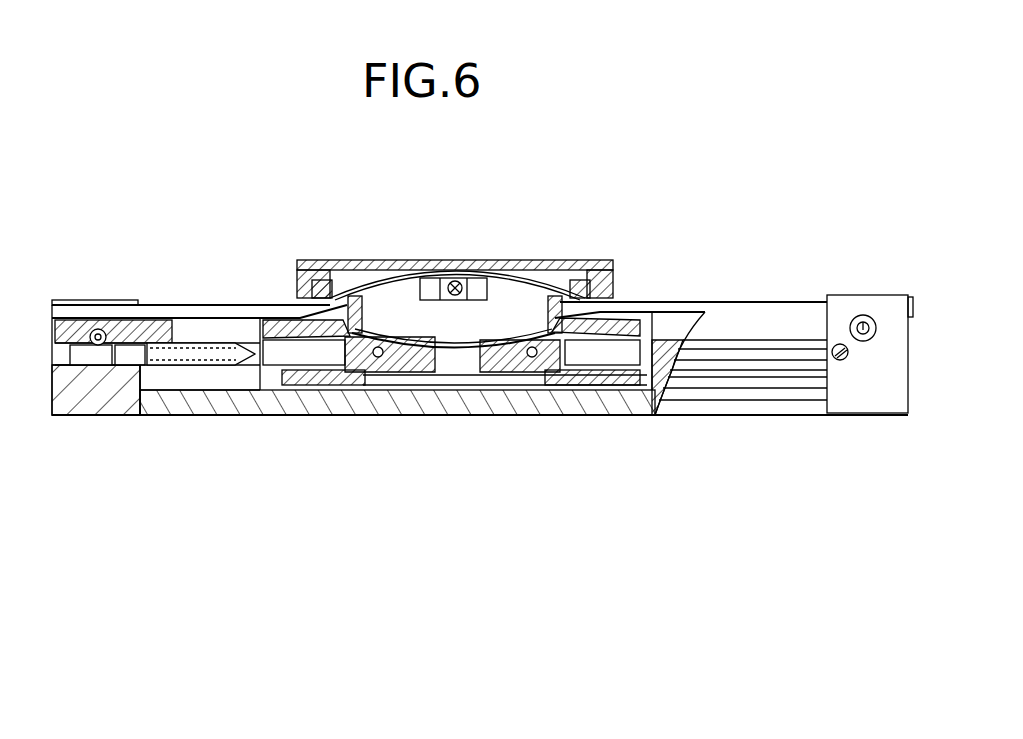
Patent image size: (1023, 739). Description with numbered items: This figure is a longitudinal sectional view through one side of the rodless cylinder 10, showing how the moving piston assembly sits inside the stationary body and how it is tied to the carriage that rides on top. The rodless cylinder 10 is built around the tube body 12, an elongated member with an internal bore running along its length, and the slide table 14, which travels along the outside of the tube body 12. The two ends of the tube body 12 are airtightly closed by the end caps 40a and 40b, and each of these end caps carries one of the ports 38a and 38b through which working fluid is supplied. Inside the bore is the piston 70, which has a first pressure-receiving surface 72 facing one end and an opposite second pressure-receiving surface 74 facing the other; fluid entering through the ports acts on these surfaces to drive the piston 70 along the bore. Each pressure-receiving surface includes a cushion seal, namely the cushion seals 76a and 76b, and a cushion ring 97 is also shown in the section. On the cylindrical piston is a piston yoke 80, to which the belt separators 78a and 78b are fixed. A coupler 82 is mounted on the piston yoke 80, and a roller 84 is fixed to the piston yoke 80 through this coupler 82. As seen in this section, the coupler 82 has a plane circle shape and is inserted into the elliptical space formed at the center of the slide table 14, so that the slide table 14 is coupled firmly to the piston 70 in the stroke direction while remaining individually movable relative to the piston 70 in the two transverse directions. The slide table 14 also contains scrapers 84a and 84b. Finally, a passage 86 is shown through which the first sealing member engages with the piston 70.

The rodless cylinder 10 is at (640, 195).
The tube body 12 is at (190, 417).
The slide table 14 is at (513, 257).
The port 38a is at (863, 315).
The port 38b is at (98, 330).
The end cap 40a is at (893, 380).
The end cap 40b is at (102, 400).
The piston 70 is at (385, 392).
The first pressure-receiving surface 72 is at (653, 373).
The second pressure-receiving surface 74 is at (250, 385).
The cushion seal 76a is at (653, 302).
The cushion seal 76b is at (258, 300).
The belt separator 78a is at (547, 262).
The belt separator 78b is at (356, 262).
The piston yoke 80 is at (432, 355).
The coupler 82 is at (487, 262).
The roller 84 is at (447, 262).
The scraper 84a is at (593, 262).
The scraper 84b is at (335, 262).
The passage 86 is at (452, 335).
The cushion ring 97 is at (200, 345).